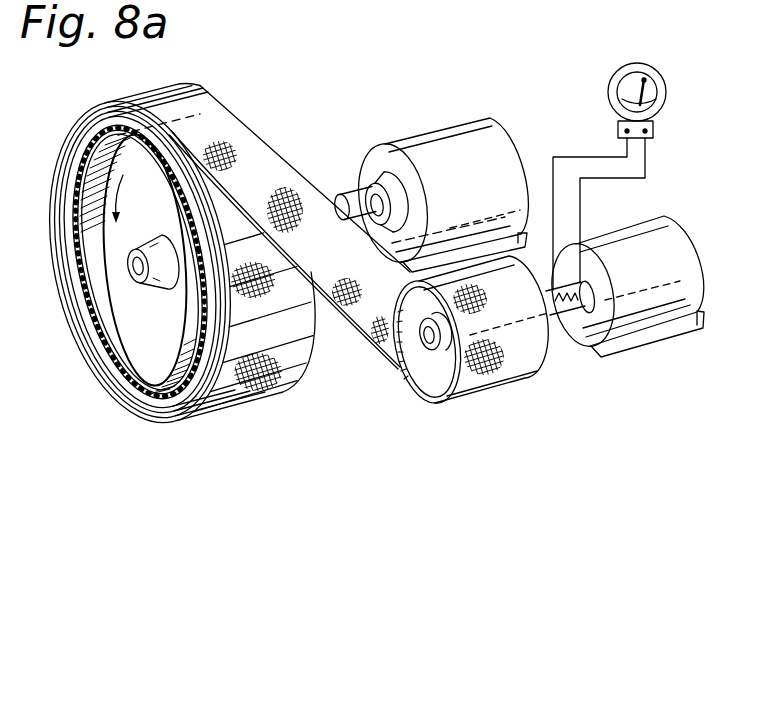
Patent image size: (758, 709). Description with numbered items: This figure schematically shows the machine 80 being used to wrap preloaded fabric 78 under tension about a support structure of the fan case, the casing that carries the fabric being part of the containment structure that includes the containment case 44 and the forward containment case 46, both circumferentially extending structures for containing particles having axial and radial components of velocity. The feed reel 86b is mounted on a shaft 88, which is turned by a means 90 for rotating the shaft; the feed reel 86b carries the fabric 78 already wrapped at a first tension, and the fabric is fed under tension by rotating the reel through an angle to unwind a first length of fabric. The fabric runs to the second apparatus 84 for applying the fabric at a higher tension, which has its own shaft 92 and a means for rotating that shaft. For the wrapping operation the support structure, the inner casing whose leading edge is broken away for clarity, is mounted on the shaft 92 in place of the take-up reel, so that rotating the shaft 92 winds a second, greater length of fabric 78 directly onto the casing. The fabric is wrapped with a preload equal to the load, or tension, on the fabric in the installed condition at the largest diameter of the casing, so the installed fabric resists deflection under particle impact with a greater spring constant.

The containment case 44 is at (243, 126).
The forward containment case 46 is at (102, 258).
The fabric 78 is at (263, 194).
The machine 80 is at (343, 127).
The second apparatus 84 is at (488, 201).
The feed reel 86b is at (480, 402).
The shaft 88 is at (551, 322).
The means for rotating the shaft 90 is at (663, 284).
The shaft 92 is at (136, 288).